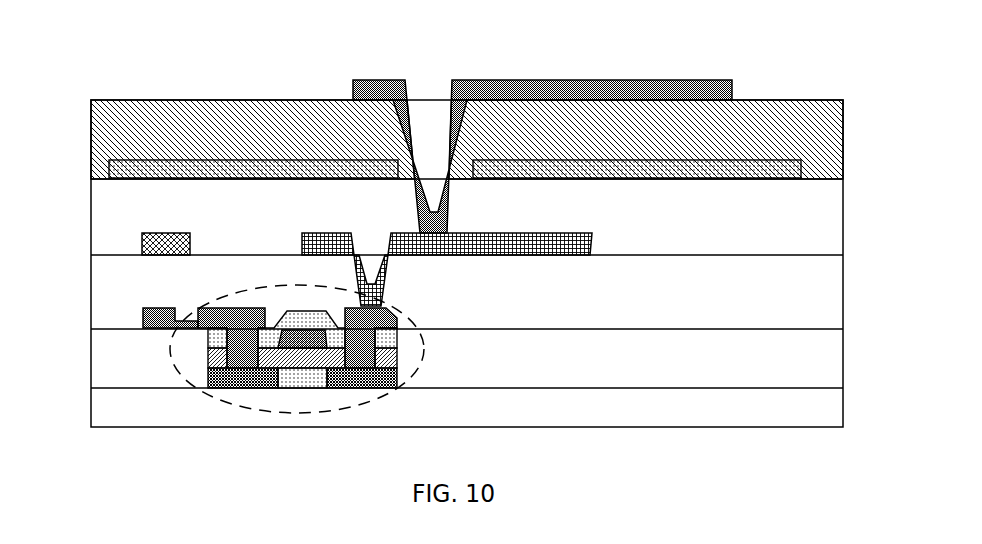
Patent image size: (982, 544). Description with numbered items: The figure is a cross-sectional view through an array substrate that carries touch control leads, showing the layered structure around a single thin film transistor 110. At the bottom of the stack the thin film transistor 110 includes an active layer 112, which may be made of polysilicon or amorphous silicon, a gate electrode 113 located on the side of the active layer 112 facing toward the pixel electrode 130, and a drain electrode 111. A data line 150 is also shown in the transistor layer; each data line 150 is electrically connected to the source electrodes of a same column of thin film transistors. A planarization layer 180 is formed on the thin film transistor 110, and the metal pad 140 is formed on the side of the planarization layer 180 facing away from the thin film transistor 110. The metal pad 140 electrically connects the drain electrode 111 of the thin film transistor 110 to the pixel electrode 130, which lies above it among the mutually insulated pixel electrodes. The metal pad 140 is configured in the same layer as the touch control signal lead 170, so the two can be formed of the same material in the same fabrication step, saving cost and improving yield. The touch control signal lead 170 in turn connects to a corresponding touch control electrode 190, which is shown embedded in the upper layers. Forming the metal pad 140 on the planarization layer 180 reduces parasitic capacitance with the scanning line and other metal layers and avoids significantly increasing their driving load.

The thin film transistor 110 is at (352, 404).
The drain electrode 111 is at (397, 309).
The active layer 112 is at (295, 382).
The gate electrode 113 is at (303, 337).
The pixel electrode 130 is at (532, 81).
The metal pad 140 is at (302, 250).
The data line 150 is at (153, 322).
The touch control signal lead 170 is at (162, 243).
The planarization layer 180 is at (812, 310).
The touch control electrode 190 is at (757, 160).